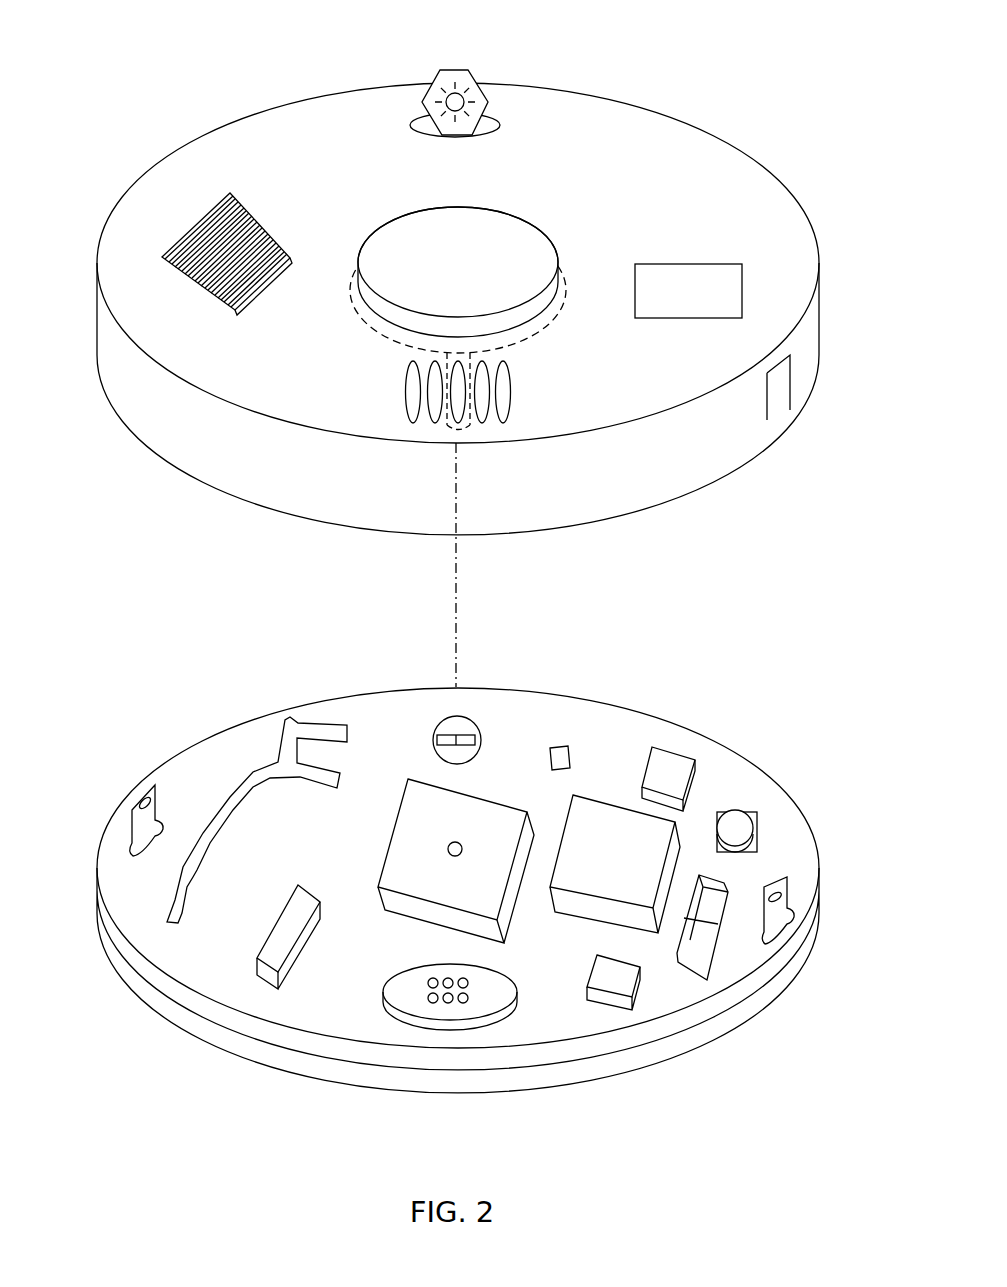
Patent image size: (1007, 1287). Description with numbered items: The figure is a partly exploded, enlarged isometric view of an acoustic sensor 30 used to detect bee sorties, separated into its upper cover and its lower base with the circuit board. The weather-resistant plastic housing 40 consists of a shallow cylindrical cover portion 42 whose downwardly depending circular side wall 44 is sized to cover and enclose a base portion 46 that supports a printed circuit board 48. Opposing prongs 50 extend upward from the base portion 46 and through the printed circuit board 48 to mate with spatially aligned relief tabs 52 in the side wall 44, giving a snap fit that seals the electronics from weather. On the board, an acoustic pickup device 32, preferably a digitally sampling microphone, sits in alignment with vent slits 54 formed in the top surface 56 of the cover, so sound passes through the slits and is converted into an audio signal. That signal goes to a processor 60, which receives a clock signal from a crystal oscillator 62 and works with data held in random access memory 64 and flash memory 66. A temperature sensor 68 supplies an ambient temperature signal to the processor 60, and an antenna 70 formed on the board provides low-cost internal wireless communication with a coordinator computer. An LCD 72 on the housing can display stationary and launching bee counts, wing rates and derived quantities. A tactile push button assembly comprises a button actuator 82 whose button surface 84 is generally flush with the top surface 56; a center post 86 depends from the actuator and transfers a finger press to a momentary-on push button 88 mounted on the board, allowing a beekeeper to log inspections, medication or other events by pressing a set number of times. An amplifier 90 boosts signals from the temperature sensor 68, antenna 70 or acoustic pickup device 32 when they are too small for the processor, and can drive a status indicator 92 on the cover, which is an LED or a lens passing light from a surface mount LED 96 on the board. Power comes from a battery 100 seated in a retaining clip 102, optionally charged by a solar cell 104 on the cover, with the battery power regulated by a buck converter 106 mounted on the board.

The acoustic sensor 30 is at (606, 70).
The acoustic pickup device 32 is at (492, 985).
The housing 40 is at (803, 193).
The cover portion 42 is at (657, 132).
The side wall 44 is at (808, 368).
The base portion 46 is at (790, 975).
The printed circuit board 48 is at (140, 910).
The prongs 50 is at (138, 820).
The relief tabs 52 is at (777, 400).
The vent slits 54 is at (412, 400).
The top surface 56 is at (624, 229).
The processor 60 is at (597, 863).
The crystal oscillator 62 is at (560, 747).
The random access memory 64 is at (697, 950).
The flash memory 66 is at (713, 893).
The temperature sensor 68 is at (598, 980).
The antenna 70 is at (310, 730).
The LCD 72 is at (733, 283).
The button actuator 82 is at (397, 230).
The button surface 84 is at (537, 216).
The center post 86 is at (450, 430).
The momentary-on push button 88 is at (472, 815).
The amplifier 90 is at (277, 934).
The status indicator 92 is at (449, 72).
The surface mount LED 96 is at (465, 726).
The battery 100 is at (732, 822).
The retaining clip 102 is at (757, 836).
The solar cell 104 is at (233, 195).
The buck converter 106 is at (661, 762).